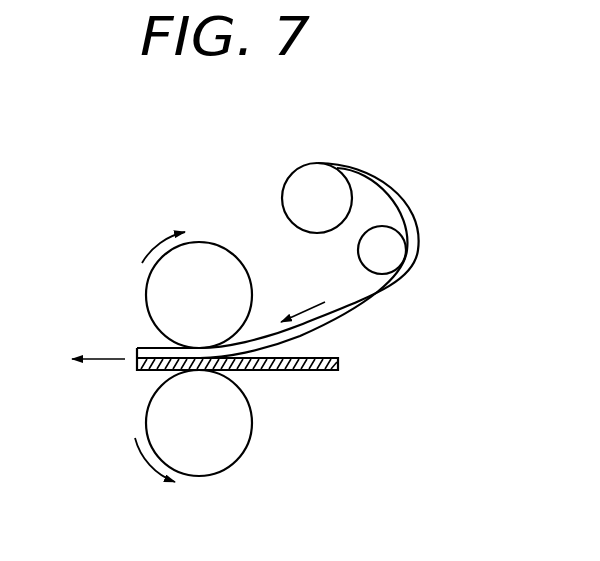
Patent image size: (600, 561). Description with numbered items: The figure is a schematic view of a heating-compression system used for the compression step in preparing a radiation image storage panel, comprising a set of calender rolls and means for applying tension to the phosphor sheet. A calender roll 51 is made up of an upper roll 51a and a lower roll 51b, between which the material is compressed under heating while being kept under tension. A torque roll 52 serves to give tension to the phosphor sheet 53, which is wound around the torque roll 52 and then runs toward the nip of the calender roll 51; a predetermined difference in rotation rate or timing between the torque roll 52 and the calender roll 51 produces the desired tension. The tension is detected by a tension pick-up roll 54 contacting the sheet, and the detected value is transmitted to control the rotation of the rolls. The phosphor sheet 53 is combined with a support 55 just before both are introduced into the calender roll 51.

The calender roll 51 is at (209, 233).
The upper roll 51a is at (218, 307).
The lower roll 51b is at (217, 442).
The torque roll 52 is at (332, 208).
The phosphor sheet 53 is at (383, 197).
The tension pick-up roll 54 is at (398, 262).
The sheet / substrate 55 is at (278, 372).